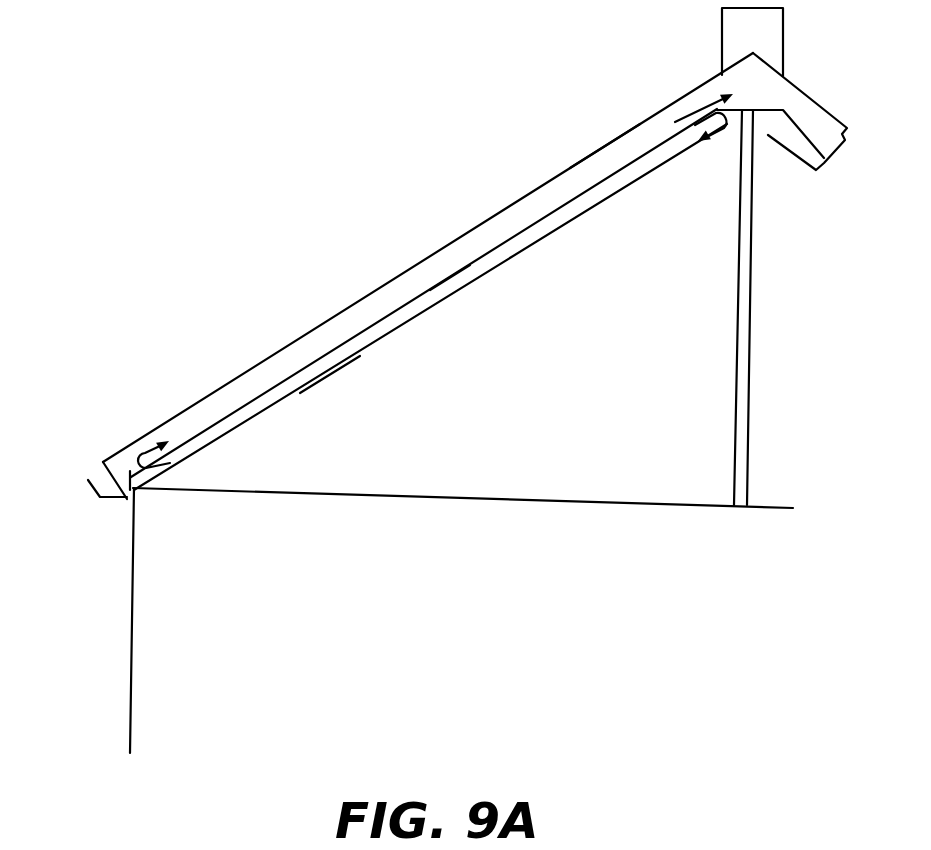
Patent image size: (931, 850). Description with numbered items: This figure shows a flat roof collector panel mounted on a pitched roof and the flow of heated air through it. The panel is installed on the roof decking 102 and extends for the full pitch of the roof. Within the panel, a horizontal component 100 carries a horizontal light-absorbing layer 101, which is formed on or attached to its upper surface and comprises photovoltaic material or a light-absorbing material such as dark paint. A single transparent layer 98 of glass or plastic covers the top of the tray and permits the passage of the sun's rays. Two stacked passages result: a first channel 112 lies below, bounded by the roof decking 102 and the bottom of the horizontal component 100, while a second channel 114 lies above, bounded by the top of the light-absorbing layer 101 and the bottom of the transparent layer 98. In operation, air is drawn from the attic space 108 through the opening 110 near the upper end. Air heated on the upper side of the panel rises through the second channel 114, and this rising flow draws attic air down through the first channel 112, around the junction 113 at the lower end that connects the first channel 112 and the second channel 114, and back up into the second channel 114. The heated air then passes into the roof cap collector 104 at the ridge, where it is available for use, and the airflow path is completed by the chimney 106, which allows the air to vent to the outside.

The transparent layer 98 is at (277, 355).
The horizontal component 100 is at (532, 224).
The light-absorbing layer 101 is at (446, 280).
The roof decking 102 is at (490, 275).
The roof cap collector 104 is at (745, 80).
The chimney 106 is at (778, 44).
The attic space 108 is at (618, 460).
The opening 110 is at (729, 145).
The first channel 112 is at (320, 370).
The junction 113 is at (127, 493).
The second channel 114 is at (595, 160).